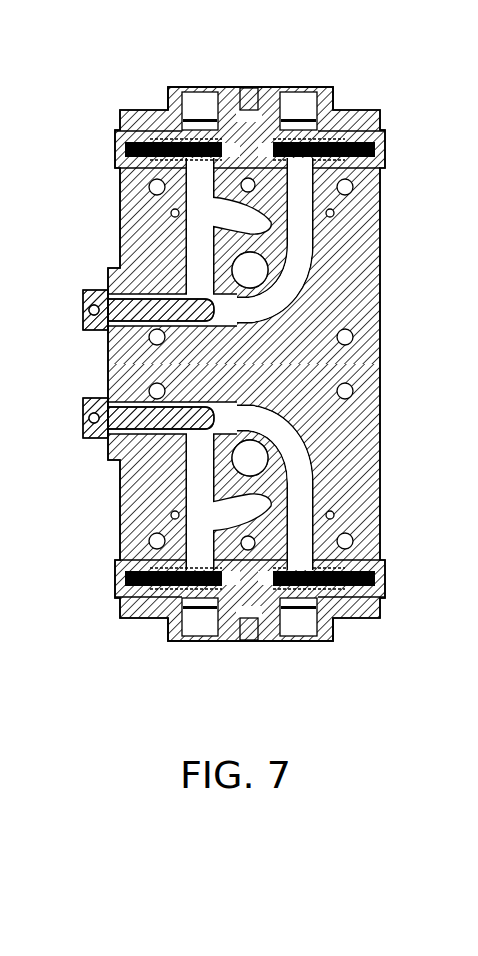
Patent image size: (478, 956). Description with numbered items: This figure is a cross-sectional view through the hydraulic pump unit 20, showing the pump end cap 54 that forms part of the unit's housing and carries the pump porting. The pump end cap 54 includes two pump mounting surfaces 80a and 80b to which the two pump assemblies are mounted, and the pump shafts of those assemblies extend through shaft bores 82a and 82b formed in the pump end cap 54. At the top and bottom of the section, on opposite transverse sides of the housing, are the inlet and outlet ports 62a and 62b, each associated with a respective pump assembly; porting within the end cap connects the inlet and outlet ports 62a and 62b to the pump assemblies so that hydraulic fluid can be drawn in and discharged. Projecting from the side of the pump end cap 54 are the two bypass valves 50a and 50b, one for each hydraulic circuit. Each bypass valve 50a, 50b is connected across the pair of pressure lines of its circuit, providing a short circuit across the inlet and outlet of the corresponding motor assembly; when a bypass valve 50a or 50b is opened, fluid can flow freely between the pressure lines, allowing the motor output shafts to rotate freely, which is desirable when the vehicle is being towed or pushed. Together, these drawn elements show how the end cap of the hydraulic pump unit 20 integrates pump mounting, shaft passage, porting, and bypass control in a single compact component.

The hydraulic pump unit 20 is at (115, 96).
The pump end cap 54 is at (366, 366).
The inlet and outlet port 62a is at (294, 76).
The inlet and outlet port 62b is at (300, 641).
The bypass valve 50a is at (82, 308).
The bypass valve 50b is at (82, 420).
The pump mounting surface 80a is at (284, 221).
The pump mounting surface 80b is at (283, 497).
The shaft bore 82a is at (252, 271).
The shaft bore 82b is at (250, 458).